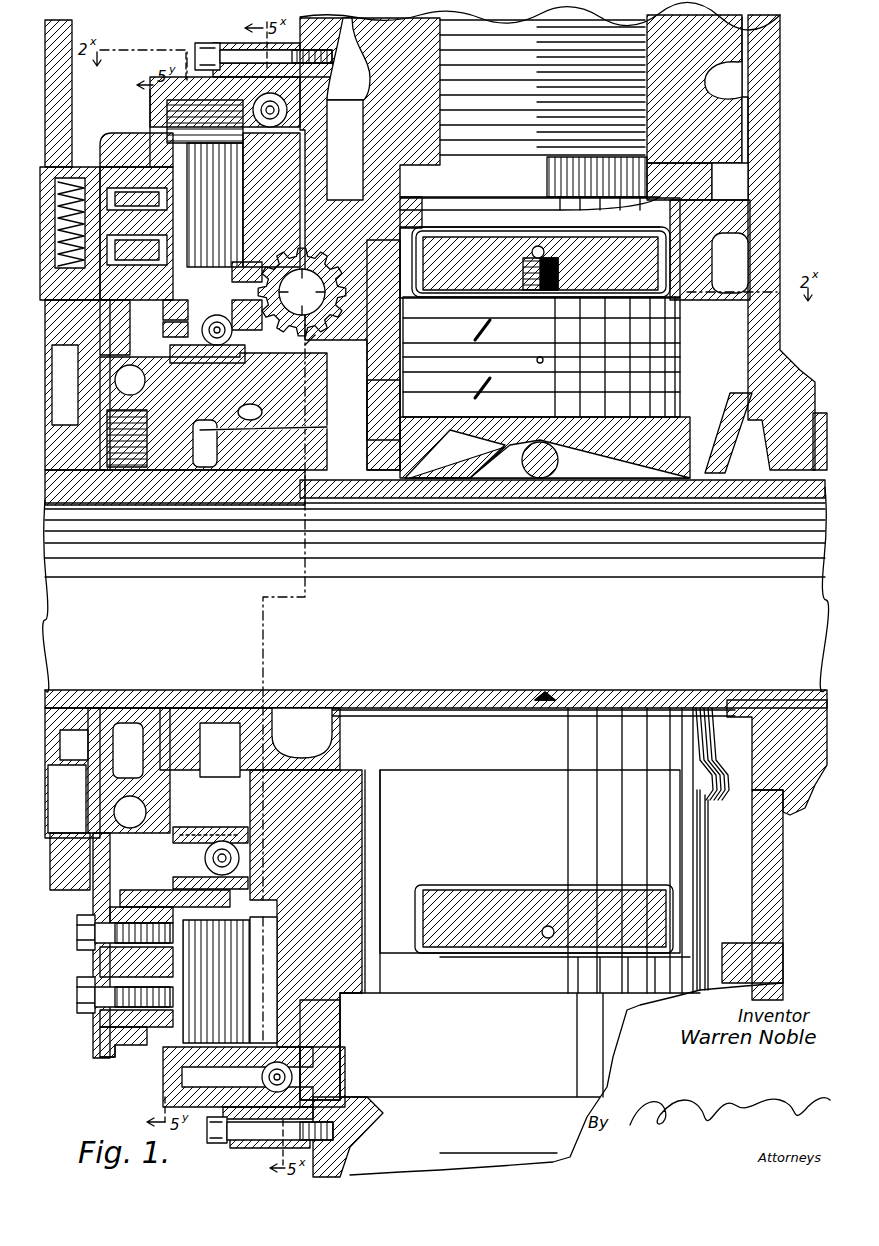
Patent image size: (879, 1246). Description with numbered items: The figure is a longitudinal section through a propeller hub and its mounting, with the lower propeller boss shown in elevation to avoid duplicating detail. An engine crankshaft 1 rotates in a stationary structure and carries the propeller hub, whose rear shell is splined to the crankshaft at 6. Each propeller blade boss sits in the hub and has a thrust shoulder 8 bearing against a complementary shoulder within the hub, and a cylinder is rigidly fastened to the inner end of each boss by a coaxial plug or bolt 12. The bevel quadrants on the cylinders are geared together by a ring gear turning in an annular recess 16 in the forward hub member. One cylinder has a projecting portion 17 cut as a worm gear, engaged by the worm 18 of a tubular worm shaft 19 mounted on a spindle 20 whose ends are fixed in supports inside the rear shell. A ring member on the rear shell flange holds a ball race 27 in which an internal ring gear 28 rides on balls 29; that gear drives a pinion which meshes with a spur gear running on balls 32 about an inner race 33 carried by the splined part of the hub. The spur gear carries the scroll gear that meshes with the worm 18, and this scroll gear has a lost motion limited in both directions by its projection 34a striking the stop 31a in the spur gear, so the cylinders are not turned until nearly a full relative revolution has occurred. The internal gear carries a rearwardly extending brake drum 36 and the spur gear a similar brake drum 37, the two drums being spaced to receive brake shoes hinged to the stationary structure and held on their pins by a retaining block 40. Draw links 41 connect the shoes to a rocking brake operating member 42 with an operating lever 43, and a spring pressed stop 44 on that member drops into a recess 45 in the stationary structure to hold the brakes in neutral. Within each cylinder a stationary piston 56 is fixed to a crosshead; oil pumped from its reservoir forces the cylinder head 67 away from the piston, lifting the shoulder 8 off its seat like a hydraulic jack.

The shaft 1 is at (155, 497).
The spline 6 is at (255, 398).
The thrust shoulder 8 is at (743, 100).
The plug or bolt 12 is at (680, 207).
The annular recess 16 is at (764, 493).
The projecting portion 17 is at (372, 330).
The worm 18 is at (330, 258).
The worm shaft 19 is at (320, 338).
The spindle 20 is at (255, 330).
The ball race 27 is at (272, 1112).
The internal ring gear 28 is at (255, 1037).
The balls 29 is at (300, 1080).
The stop 31a is at (178, 350).
The balls 32 is at (214, 858).
The inner race 33 is at (200, 843).
The projection 34a is at (178, 334).
The brake drum 36 is at (100, 1040).
The brake drum 37 is at (95, 903).
The retaining block 40 is at (95, 970).
The draw link 41 is at (142, 140).
The brake operating member 42 is at (110, 135).
The operating lever 43 is at (86, 100).
The spring pressed stop 44 is at (82, 162).
The recess 45 is at (62, 312).
The stationary piston 56 is at (400, 397).
The cylinder head 67 is at (393, 447).